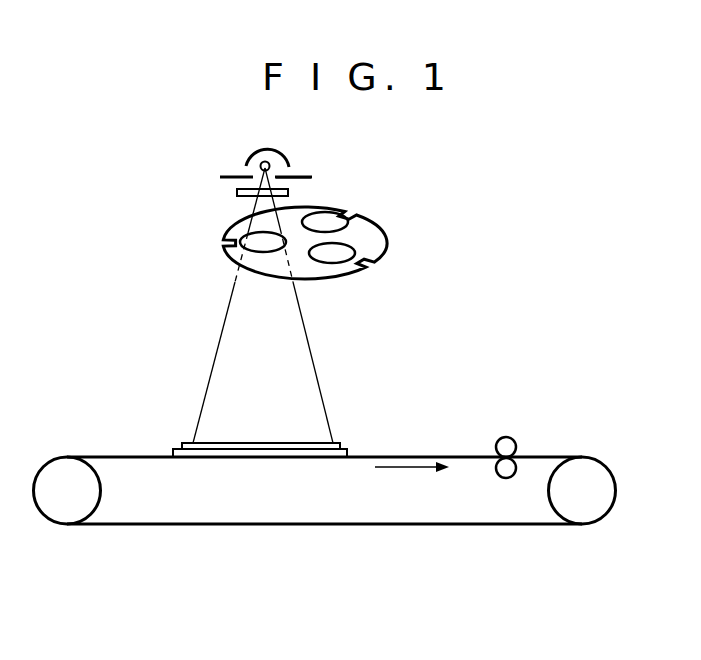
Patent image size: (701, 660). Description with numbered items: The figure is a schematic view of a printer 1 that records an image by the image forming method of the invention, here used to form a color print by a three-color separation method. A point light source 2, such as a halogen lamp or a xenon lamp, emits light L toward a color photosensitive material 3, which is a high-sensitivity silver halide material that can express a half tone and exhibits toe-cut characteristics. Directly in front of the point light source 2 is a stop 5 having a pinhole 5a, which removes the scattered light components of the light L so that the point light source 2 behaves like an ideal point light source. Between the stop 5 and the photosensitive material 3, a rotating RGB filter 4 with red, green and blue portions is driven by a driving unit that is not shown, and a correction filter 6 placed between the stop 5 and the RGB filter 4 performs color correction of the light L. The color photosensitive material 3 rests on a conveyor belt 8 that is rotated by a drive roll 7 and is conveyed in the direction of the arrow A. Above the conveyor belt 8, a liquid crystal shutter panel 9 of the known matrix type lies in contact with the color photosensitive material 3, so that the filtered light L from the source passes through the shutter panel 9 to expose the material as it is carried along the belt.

The printer 1 is at (460, 190).
The point light source 2 is at (281, 155).
The color photosensitive material 3 is at (347, 455).
The RGB filter 4 is at (380, 246).
The stop 5 is at (301, 161).
The pinhole 5a is at (277, 181).
The correction filter 6 is at (237, 191).
The drive roll 7 is at (514, 443).
The conveyor belt 8 is at (145, 456).
The liquid crystal shutter panel 9 is at (257, 443).
The light L is at (316, 366).
The arrow (conveying direction) A is at (412, 479).